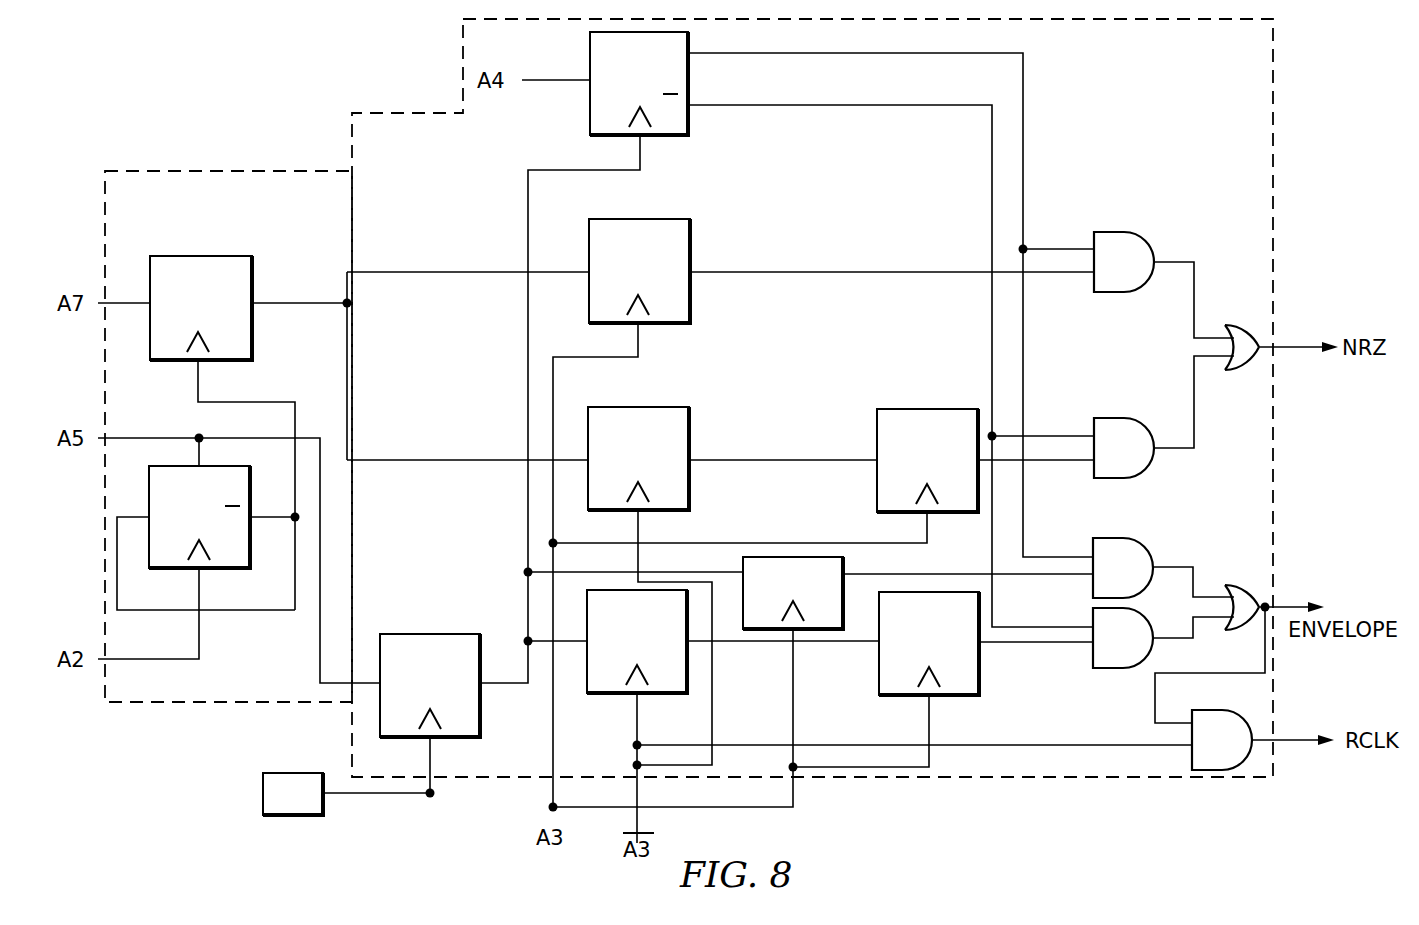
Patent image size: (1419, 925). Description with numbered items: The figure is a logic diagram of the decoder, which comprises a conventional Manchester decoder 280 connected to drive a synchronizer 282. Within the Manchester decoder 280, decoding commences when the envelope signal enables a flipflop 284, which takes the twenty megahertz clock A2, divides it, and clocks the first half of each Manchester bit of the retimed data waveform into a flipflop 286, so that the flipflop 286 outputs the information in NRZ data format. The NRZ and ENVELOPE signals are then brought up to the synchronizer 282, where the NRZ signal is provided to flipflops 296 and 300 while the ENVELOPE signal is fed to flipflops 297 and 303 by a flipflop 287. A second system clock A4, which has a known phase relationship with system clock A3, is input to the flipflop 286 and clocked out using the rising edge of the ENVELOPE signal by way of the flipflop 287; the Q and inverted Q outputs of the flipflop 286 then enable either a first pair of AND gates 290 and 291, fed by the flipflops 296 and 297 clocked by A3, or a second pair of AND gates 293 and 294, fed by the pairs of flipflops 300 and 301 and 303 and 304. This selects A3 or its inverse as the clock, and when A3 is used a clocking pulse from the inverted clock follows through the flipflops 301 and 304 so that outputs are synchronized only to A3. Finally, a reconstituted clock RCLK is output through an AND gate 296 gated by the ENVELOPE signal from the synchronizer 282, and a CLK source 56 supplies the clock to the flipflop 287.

The Manchester decoder 280 is at (281, 170).
The synchronizer 282 is at (1047, 778).
The flipflop 284 is at (178, 465).
The flipflop 286 is at (254, 326).
The flipflop 287 is at (432, 633).
The clock 56 is at (276, 772).
The AND gate 290 is at (1125, 230).
The AND gate 291 is at (1118, 537).
The AND gate 293 is at (1125, 416).
The AND gate 294 is at (1118, 670).
The flipflop / AND gate 296 is at (668, 325).
The flipflop 297 is at (760, 631).
The flipflop 300 is at (690, 497).
The flipflop 301 is at (925, 408).
The flipflop 303 is at (605, 695).
The flipflop 304 is at (980, 683).